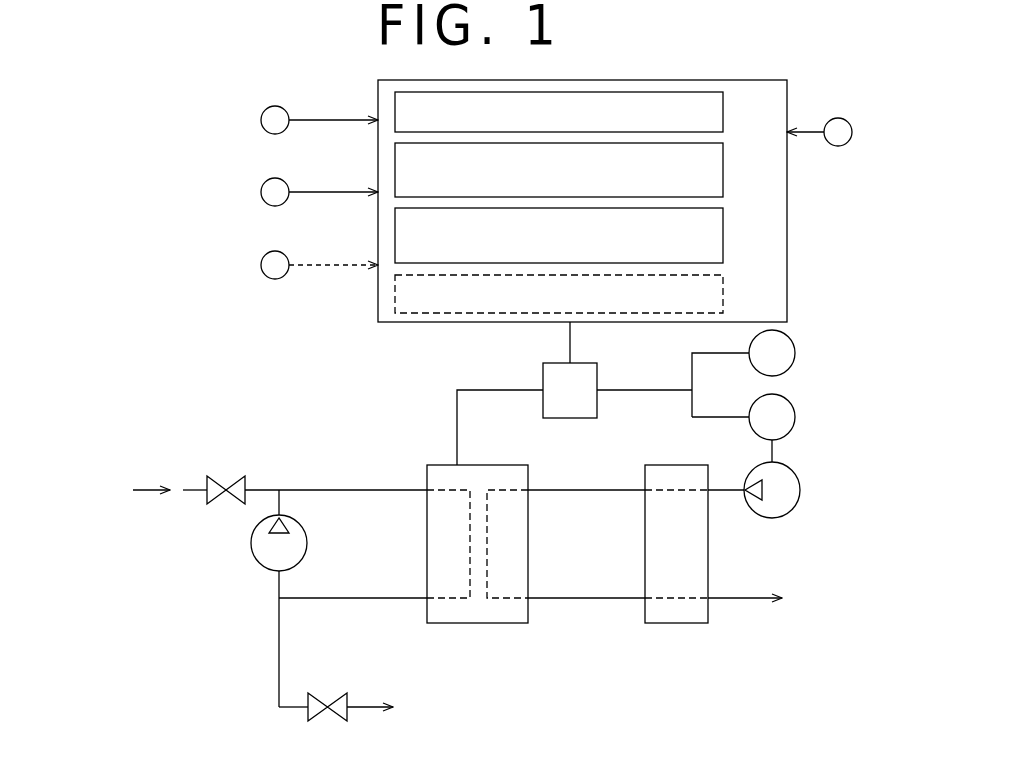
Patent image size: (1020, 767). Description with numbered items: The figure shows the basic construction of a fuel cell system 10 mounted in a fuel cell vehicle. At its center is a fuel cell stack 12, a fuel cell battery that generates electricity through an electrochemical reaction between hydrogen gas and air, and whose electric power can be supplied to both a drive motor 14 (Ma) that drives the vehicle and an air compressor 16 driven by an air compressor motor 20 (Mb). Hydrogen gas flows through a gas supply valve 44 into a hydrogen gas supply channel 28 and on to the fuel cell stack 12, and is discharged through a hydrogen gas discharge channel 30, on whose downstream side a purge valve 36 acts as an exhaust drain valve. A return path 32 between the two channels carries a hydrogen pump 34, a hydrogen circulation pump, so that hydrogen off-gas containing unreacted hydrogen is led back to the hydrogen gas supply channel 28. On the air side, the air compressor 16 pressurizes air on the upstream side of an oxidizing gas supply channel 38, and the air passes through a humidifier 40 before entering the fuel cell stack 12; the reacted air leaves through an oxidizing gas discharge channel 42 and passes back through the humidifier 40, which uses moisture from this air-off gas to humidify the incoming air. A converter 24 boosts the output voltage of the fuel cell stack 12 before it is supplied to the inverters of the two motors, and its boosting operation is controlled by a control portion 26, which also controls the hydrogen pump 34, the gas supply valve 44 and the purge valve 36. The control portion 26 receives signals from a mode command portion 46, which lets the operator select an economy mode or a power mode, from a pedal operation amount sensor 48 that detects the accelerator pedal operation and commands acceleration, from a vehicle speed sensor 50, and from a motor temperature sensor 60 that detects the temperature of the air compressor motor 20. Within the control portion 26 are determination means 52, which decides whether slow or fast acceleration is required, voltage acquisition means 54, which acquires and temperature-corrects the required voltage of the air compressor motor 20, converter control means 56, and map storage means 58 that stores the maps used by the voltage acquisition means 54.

The fuel cell system 10 is at (795, 310).
The fuel cell stack 12 is at (497, 463).
The drive motor 14 is at (796, 353).
The air compressor 16 is at (800, 490).
The air compressor motor 20 is at (796, 417).
The converter 24 is at (597, 377).
The control portion 26 is at (378, 303).
The hydrogen gas supply channel 28 is at (352, 488).
The hydrogen gas discharge channel 30 is at (395, 600).
The return path 32 is at (276, 585).
The hydrogen pump 34 is at (251, 543).
The purge valve 36 is at (337, 695).
The oxidizing gas supply channel 38 is at (599, 488).
The humidifier 40 is at (675, 625).
The oxidizing gas discharge channel 42 is at (600, 600).
The gas supply valve 44 is at (236, 483).
The mode command portion 46 is at (287, 109).
The pedal operation amount sensor 48 is at (287, 181).
The vehicle speed sensor 50 is at (839, 118).
The determination means 52 is at (723, 110).
The voltage acquisition means 54 is at (723, 166).
The converter control means 56 is at (723, 231).
The map storage means 58 is at (723, 291).
The motor temperature sensor 60 is at (287, 254).